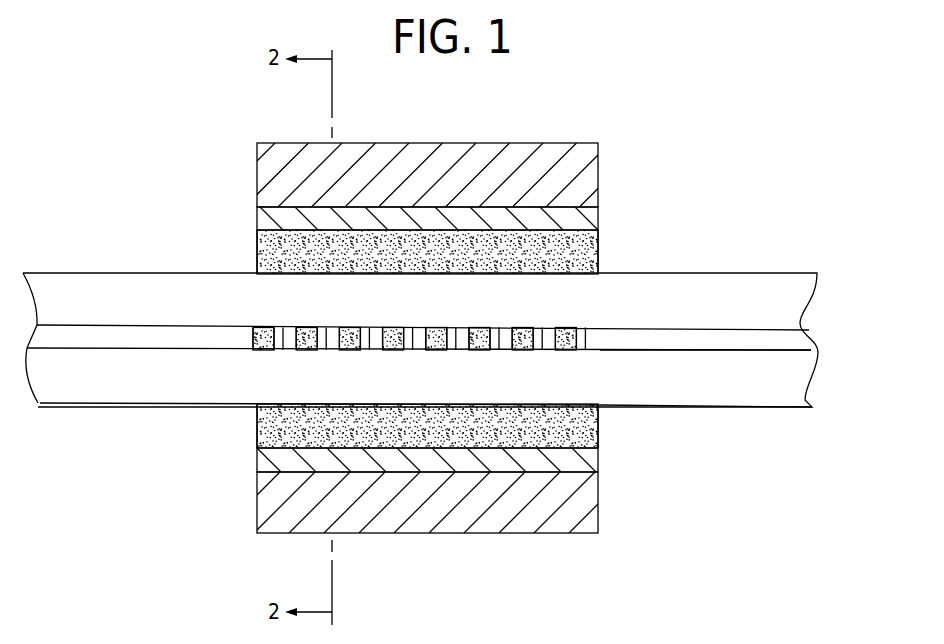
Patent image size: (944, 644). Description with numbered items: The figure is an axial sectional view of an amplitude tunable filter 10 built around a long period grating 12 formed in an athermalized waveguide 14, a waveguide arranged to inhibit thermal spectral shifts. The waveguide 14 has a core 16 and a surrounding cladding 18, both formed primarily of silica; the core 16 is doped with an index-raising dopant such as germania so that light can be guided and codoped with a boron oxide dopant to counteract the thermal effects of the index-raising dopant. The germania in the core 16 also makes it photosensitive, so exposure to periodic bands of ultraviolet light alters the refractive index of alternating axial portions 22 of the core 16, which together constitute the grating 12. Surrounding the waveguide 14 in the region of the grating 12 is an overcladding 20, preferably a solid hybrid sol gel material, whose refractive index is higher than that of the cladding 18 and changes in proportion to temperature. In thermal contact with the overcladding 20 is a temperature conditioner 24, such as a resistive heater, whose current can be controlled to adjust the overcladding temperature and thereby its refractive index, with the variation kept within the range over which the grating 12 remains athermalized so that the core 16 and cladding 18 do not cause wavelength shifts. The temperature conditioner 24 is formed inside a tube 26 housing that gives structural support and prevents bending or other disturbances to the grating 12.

The amplitude tunable filter 10 is at (218, 117).
The long period grating 12 is at (262, 368).
The athermalized waveguide 14 is at (739, 268).
The core 16 is at (758, 352).
The cladding 18 is at (686, 392).
The overcladding 20 is at (572, 258).
The alternating axial portions 22 is at (304, 327).
The temperature conditioner 24 is at (257, 217).
The tube 26 is at (519, 143).